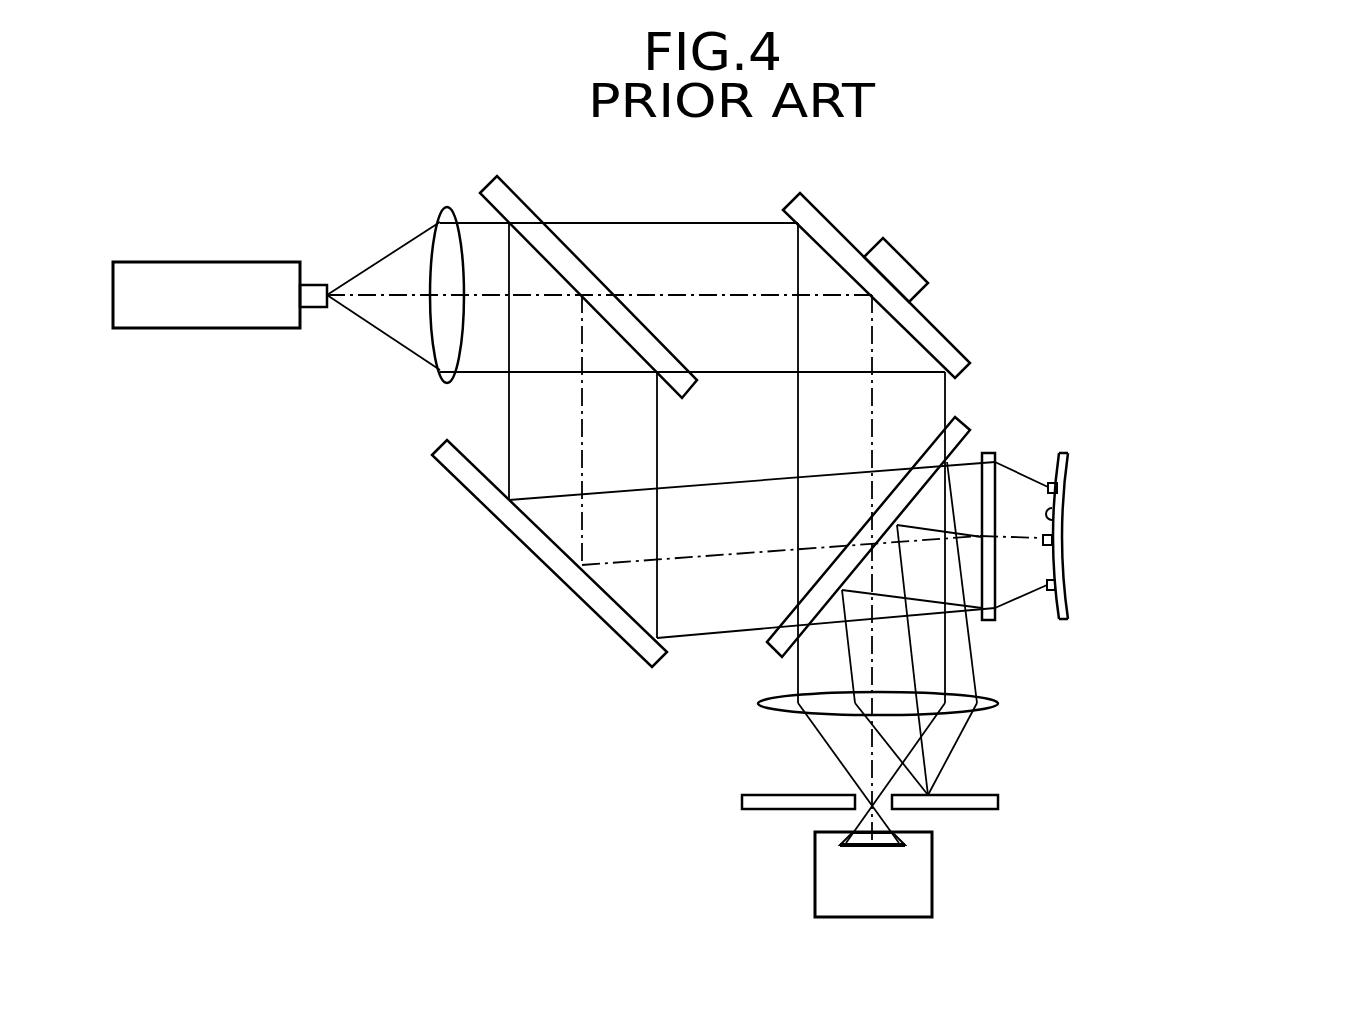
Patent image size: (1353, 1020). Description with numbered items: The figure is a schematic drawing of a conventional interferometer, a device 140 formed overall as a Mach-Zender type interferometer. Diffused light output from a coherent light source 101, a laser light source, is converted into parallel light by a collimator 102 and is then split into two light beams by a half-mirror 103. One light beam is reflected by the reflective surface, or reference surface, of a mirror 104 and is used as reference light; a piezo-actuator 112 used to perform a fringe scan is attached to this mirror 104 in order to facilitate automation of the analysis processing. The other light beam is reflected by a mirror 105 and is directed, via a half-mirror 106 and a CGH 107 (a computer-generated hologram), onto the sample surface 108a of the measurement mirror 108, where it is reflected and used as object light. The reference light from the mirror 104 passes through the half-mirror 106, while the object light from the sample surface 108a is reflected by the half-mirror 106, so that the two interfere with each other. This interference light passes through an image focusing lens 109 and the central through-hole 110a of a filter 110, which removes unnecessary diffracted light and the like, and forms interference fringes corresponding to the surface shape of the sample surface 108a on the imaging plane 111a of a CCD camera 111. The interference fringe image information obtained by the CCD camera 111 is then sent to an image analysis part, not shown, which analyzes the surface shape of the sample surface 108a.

The device 140 is at (344, 206).
The coherent light source 101 is at (168, 262).
The collimator 102 is at (447, 213).
The half-mirror 103 is at (511, 187).
The mirror 104 is at (824, 212).
The piezo-actuator 112 is at (920, 271).
The mirror 105 is at (611, 622).
The half-mirror 106 is at (771, 641).
The CGH 107 is at (988, 453).
The measurement mirror 108 is at (1069, 470).
The sample surface 108a is at (1061, 516).
The image focusing lens 109 is at (772, 710).
The central through-hole 110a is at (855, 797).
The filter 110 is at (985, 794).
The CCD camera 111 is at (815, 853).
The imaging plane 111a is at (905, 836).